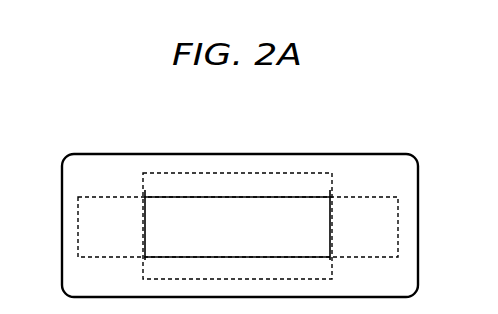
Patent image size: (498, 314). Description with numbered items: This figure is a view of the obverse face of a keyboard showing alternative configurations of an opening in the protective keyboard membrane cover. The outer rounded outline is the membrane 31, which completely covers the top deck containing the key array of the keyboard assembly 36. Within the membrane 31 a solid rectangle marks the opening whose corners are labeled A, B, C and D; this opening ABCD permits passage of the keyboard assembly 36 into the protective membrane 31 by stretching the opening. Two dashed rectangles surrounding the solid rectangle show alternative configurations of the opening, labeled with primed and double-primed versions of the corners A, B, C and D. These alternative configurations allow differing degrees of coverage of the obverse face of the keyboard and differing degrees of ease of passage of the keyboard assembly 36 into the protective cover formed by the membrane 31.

The membrane 31 is at (371, 164).
The keyboard assembly 36 is at (243, 198).
The corner of opening ABCD A is at (117, 259).
The corner of opening ABCD B is at (117, 195).
The corner of opening ABCD C is at (362, 195).
The corner of opening ABCD D is at (362, 259).